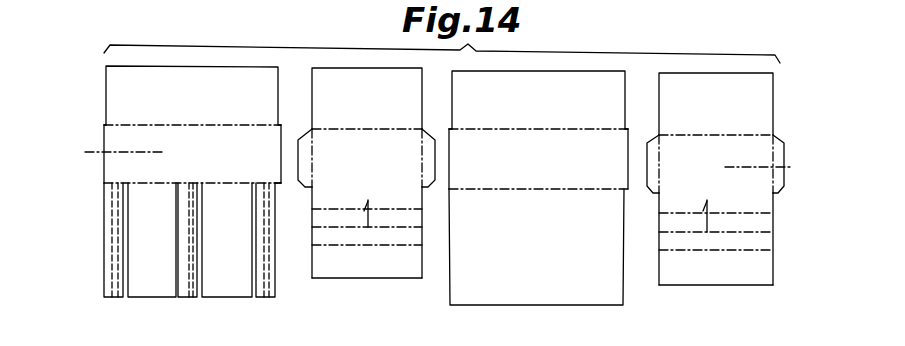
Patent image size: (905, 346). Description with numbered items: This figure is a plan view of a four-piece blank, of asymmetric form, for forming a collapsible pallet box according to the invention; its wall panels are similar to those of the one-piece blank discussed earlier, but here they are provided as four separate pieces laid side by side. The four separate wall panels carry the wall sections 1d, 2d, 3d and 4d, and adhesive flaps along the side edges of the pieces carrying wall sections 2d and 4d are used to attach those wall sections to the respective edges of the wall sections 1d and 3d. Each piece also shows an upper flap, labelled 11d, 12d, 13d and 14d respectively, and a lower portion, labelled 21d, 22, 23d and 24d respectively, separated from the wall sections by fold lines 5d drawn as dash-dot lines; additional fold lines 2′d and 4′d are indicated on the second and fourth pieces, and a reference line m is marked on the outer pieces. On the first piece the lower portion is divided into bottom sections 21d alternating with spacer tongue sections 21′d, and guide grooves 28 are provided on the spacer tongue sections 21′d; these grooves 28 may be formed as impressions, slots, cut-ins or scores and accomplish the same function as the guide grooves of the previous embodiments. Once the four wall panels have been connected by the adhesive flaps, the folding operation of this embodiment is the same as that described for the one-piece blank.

The top closure flap of first blank 11d is at (204, 105).
The fold lines 5d is at (222, 124).
The wall section 1d is at (197, 163).
The bottom panels 21d is at (165, 238).
The guide groove 28 is at (283, 252).
The spacer tongue section 21′d is at (119, 298).
The top closure flap of second blank 12d is at (375, 105).
The wall section 2d is at (374, 163).
The fold lines of second panel 2′d is at (322, 203).
The bottom panel of second blank 22 is at (361, 268).
The top closure flap of third blank 13d is at (549, 102).
The wall section 3d is at (545, 165).
The bottom panel of third blank 23d is at (545, 261).
The top closure flap of fourth blank 14d is at (730, 105).
The wall section 4d is at (716, 173).
The fold lines of fourth panel 4′d is at (666, 222).
The bottom panel of fourth blank 24d is at (722, 271).
The reference line m is at (94, 151).